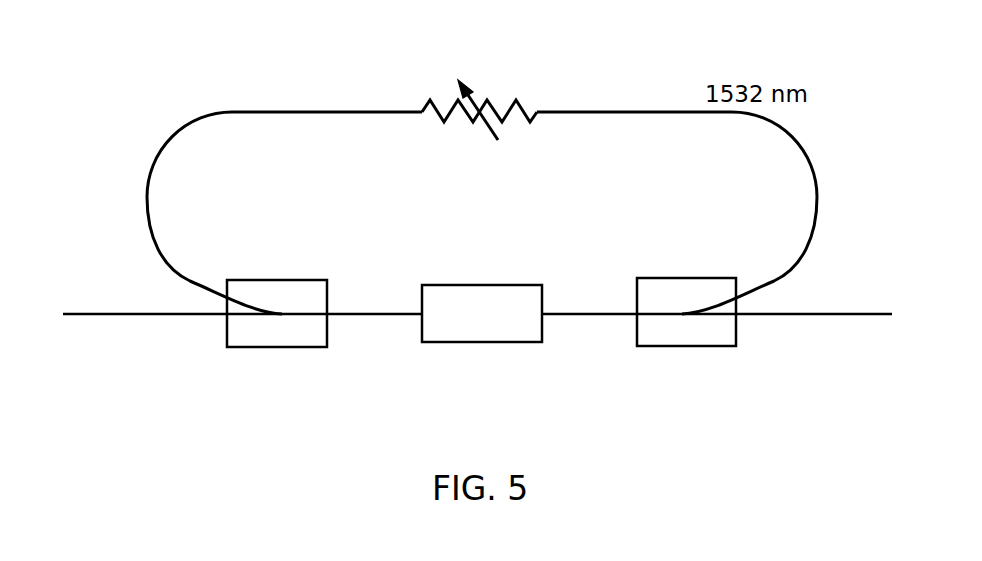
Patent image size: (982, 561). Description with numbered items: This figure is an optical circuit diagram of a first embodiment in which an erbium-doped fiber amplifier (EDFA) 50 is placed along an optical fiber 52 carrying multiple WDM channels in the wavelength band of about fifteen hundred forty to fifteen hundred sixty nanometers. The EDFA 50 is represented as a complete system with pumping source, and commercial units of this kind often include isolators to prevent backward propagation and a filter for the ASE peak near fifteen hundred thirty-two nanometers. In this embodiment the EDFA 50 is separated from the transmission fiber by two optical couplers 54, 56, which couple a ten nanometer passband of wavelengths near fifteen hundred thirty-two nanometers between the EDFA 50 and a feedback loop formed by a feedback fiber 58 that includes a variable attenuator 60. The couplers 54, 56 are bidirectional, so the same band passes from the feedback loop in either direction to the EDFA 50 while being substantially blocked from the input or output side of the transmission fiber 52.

The erbium-doped fiber amplifier 50 is at (482, 333).
The optical fiber 52 is at (130, 314).
The optical coupler 54 is at (280, 340).
The optical coupler 56 is at (690, 337).
The feedback fiber 58 is at (247, 113).
The variable attenuator 60 is at (535, 115).